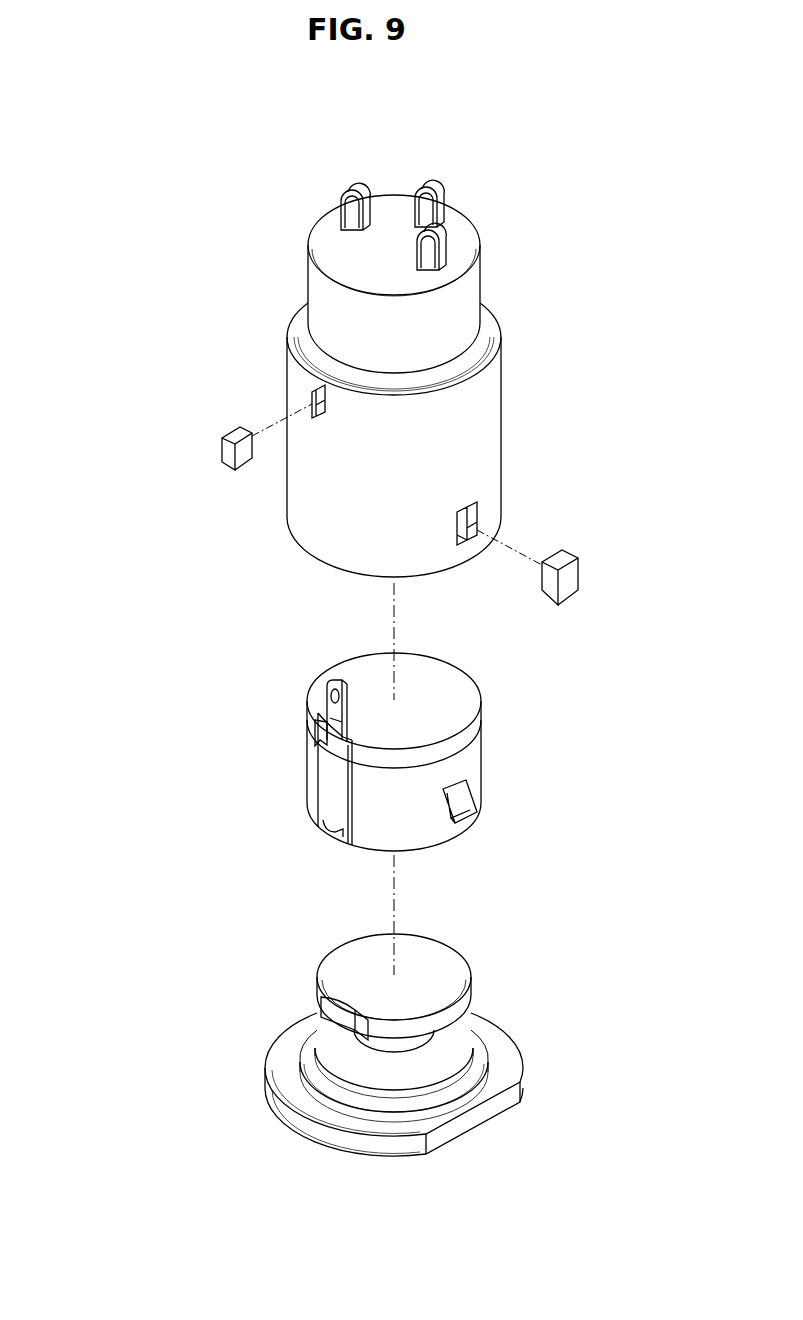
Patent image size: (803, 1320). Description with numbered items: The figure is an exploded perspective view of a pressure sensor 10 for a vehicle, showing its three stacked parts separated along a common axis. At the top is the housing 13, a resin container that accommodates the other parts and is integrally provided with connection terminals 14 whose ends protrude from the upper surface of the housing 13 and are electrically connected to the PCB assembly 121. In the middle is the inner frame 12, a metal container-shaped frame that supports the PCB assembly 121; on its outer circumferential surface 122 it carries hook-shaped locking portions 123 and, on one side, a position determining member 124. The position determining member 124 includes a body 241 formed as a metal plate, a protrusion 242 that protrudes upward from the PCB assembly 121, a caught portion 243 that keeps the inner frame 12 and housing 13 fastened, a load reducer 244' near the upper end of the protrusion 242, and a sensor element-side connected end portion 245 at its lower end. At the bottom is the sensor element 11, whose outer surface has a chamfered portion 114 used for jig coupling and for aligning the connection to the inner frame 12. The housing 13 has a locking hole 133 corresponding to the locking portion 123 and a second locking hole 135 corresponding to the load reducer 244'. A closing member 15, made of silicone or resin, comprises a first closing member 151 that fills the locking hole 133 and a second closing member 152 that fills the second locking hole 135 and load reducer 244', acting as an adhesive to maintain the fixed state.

The pressure sensor 10 is at (404, 115).
The sensor element 11 is at (529, 1016).
The inner frame 12 is at (569, 697).
The housing 13 is at (521, 361).
The connection terminal 14 is at (431, 185).
The closing member 15 is at (121, 417).
The chamfered portion 114 is at (330, 1008).
The printed circuit board assembly 121 is at (470, 693).
The outer circumferential surface 122 is at (466, 762).
The locking portion 123 is at (458, 803).
The position determining member 124 is at (185, 642).
The locking hole 133 is at (470, 520).
The second locking hole 135 is at (312, 395).
The first closing member 151 is at (578, 580).
The second closing member 152 is at (222, 446).
The body 241 is at (335, 792).
The protrusion 242 is at (330, 712).
The caught portion 243 is at (322, 735).
The load reducer 244' is at (266, 678).
The sensor element-side connected end portion 245 is at (330, 830).